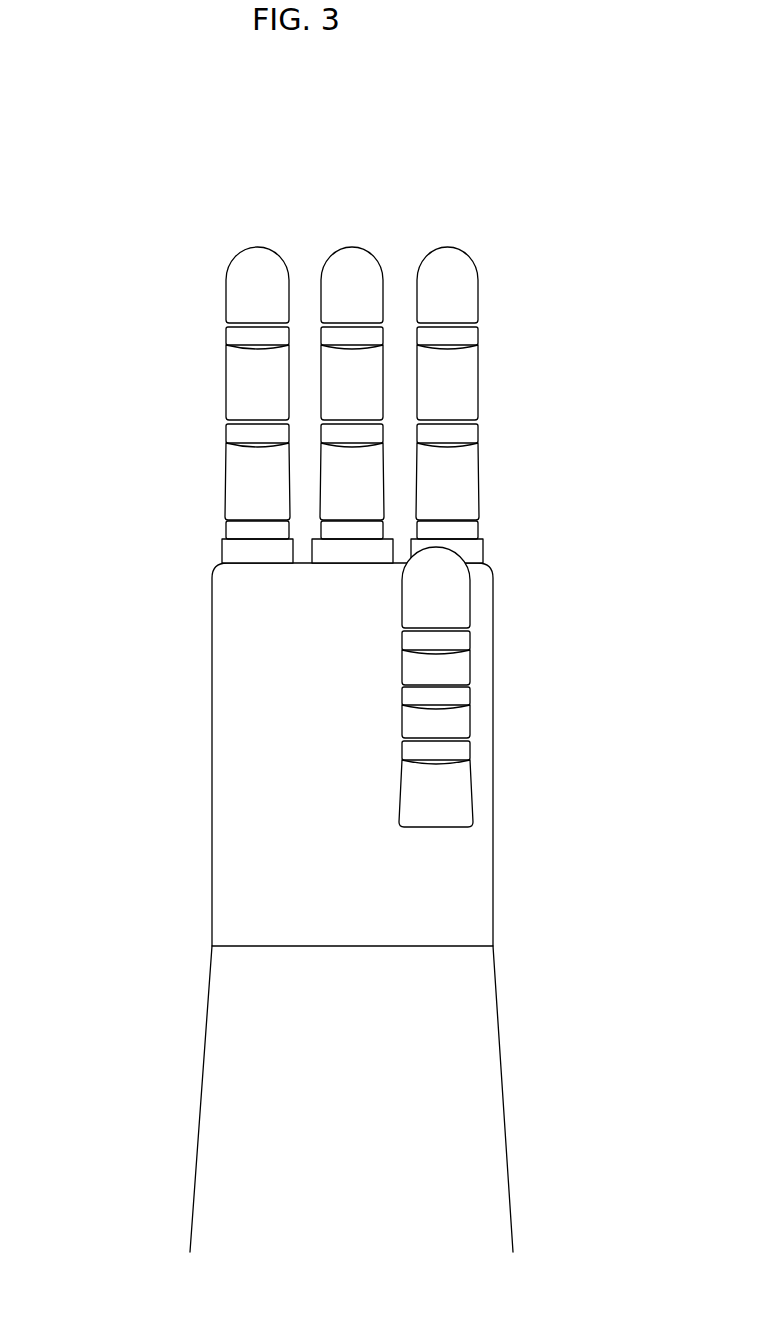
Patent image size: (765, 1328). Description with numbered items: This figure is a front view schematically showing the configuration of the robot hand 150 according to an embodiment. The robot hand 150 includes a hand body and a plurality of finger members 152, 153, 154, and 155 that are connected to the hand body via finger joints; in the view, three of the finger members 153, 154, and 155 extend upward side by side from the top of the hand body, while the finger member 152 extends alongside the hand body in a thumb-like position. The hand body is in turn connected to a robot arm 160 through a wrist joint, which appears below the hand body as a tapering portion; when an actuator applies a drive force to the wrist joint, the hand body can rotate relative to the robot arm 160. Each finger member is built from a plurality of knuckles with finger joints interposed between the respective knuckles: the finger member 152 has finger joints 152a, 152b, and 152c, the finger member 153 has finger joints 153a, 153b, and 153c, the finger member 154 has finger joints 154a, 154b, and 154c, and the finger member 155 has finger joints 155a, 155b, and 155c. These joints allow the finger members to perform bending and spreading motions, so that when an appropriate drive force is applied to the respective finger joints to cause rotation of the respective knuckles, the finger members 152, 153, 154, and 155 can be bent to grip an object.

The robot hand 150 is at (128, 574).
The finger member 152 is at (491, 687).
The finger joint 152a is at (462, 751).
The finger joint 152b is at (462, 696).
The finger joint 152c is at (462, 640).
The finger member 153 is at (495, 377).
The finger joint 153a is at (470, 530).
The finger joint 153b is at (470, 432).
The finger joint 153c is at (470, 337).
The finger member 154 is at (314, 371).
The finger joint 154a is at (354, 525).
The finger joint 154b is at (348, 428).
The finger joint 154c is at (343, 330).
The finger member 155 is at (212, 376).
The finger joint 155a is at (238, 533).
The finger joint 155b is at (238, 435).
The finger joint 155c is at (238, 335).
The robot arm 160 is at (170, 1063).